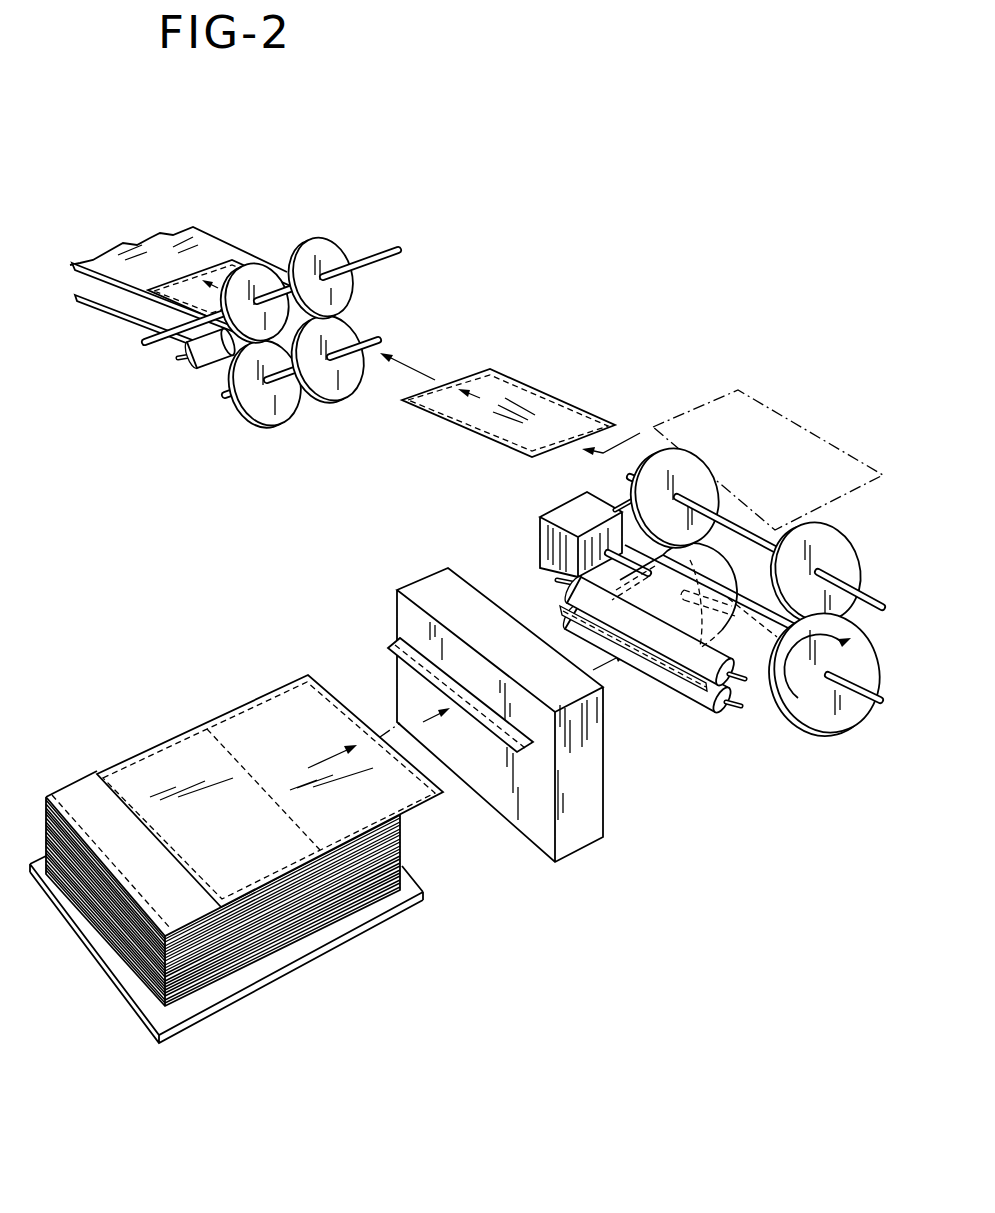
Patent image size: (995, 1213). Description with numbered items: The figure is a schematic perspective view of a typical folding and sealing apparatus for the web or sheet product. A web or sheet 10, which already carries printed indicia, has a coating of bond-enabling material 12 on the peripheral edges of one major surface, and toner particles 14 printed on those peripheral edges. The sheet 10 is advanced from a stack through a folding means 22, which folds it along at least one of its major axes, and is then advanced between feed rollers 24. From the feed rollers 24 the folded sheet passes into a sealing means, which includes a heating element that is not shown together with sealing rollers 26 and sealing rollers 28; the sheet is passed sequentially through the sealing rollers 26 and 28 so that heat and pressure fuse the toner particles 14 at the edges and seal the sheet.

The web or sheet 10 is at (270, 758).
The bond-enabling material 12 is at (117, 764).
The toner particles 14 is at (177, 738).
The folding means 22 is at (603, 813).
The feed rollers 24 is at (717, 717).
The sealing rollers 26 is at (820, 727).
The sealing rollers 28 is at (342, 247).